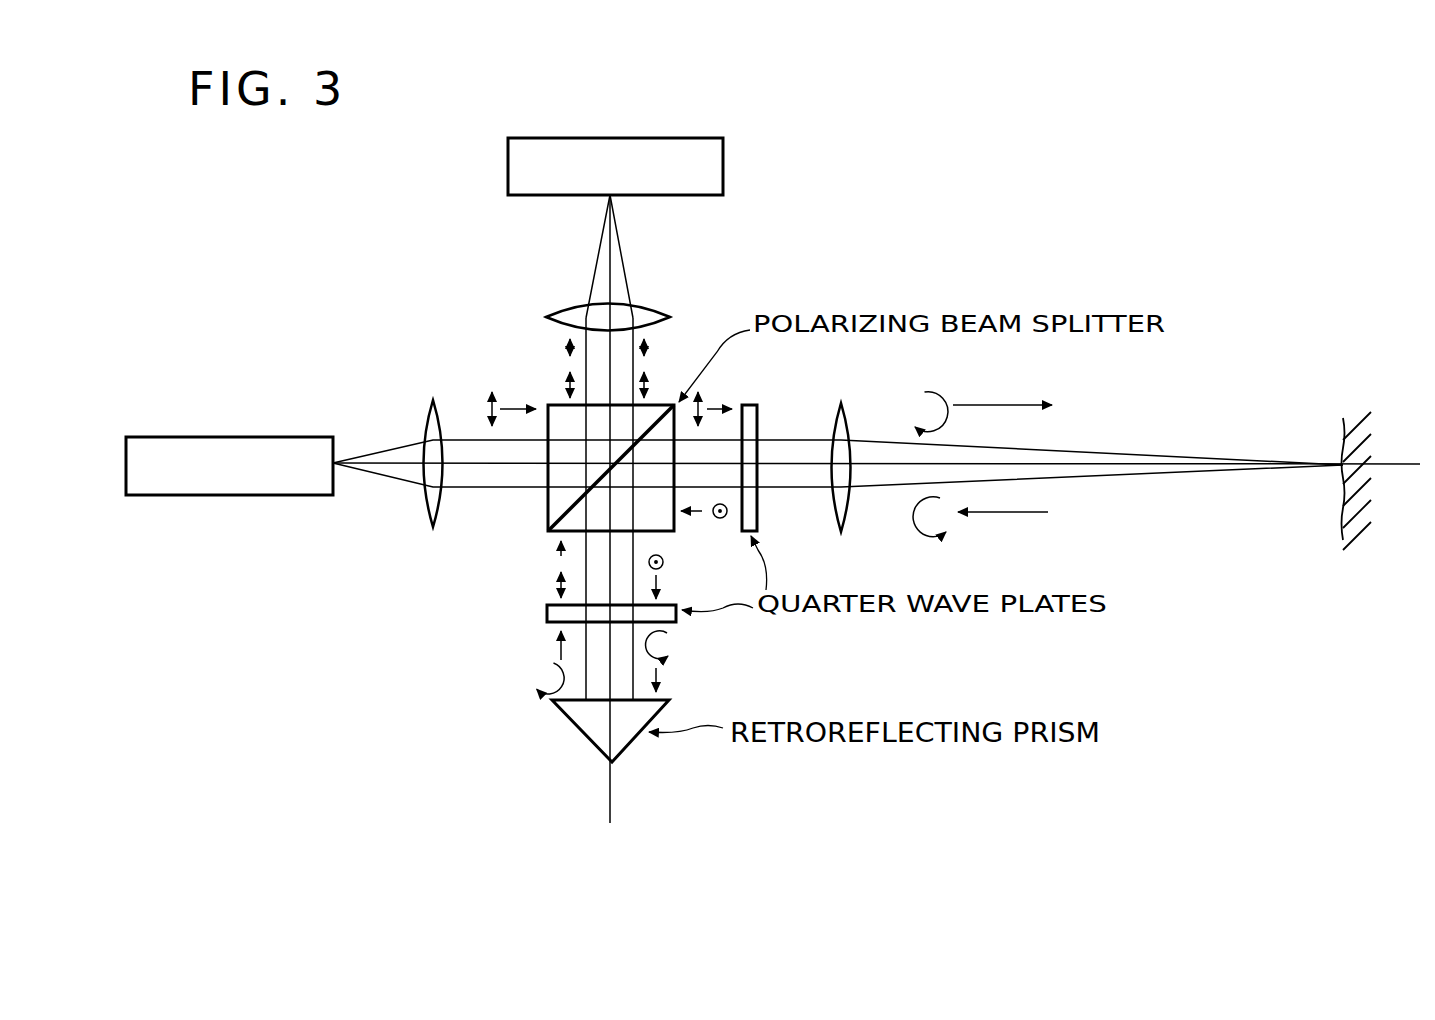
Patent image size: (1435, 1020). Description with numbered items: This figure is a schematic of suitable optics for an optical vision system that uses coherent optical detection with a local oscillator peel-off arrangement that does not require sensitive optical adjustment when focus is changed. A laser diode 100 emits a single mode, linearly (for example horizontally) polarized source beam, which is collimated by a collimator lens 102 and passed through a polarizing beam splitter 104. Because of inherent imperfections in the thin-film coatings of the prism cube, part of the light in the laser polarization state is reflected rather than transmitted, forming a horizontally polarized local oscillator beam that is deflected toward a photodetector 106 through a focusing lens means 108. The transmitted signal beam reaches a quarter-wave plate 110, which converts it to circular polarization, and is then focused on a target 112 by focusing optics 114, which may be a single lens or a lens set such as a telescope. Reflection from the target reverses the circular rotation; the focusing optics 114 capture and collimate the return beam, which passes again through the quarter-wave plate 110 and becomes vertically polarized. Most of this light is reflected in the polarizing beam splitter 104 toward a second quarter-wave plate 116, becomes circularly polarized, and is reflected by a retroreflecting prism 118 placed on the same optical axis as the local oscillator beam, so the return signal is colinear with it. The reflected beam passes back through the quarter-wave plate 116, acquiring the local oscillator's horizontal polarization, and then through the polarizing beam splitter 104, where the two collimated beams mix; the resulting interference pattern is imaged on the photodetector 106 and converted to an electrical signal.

The laser diode 100 is at (230, 437).
The collimator lens 102 is at (433, 400).
The polarizing beam splitter 104 is at (553, 511).
The photodetector 106 is at (723, 157).
The focusing lens means 108 is at (666, 312).
The quarter-wave plate 110 is at (757, 405).
The target 112 is at (1343, 426).
The focusing optics 114 is at (851, 408).
The quarter-wave plate 116 is at (547, 615).
The retroreflecting prism 118 is at (620, 745).